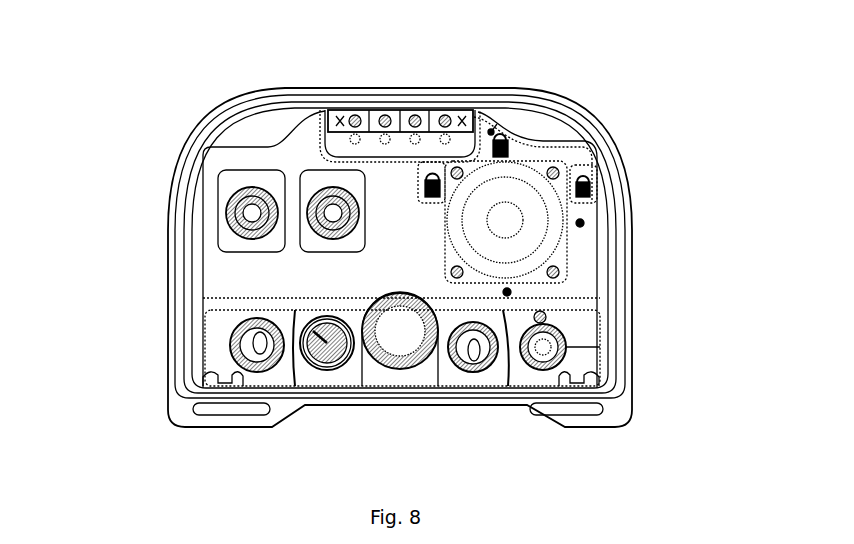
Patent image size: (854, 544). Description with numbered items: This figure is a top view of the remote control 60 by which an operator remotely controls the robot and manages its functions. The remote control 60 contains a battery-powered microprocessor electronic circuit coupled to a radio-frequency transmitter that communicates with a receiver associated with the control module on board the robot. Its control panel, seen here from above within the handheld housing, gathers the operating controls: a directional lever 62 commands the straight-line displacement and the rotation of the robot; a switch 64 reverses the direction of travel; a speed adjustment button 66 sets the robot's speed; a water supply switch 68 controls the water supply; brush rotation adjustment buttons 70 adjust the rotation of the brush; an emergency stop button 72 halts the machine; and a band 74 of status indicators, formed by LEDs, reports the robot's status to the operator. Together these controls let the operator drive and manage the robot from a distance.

The remote control 60 is at (668, 92).
The directional lever 62 is at (548, 212).
The switch for reversing the direction of travel 64 is at (257, 346).
The speed adjustment button 66 is at (327, 367).
The water supply switch 68 is at (470, 365).
The brush rotation adjustment buttons 70 is at (404, 348).
The emergency stop button 72 is at (320, 243).
The band of status indicators 74 is at (423, 110).